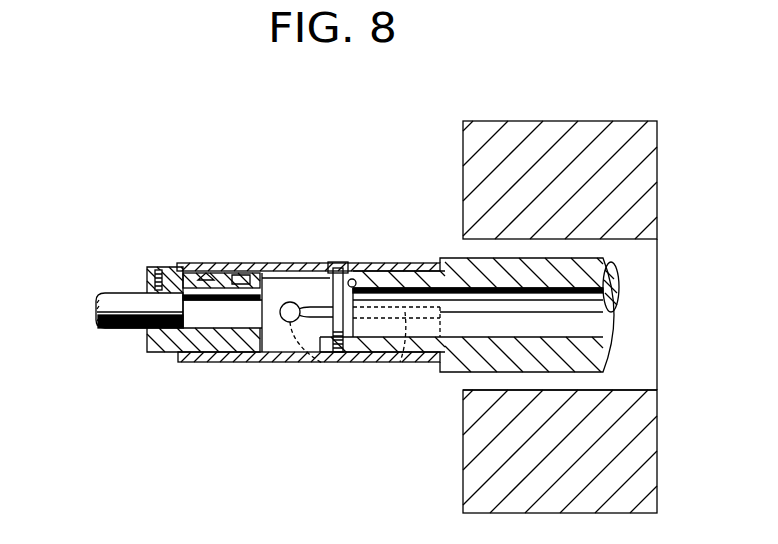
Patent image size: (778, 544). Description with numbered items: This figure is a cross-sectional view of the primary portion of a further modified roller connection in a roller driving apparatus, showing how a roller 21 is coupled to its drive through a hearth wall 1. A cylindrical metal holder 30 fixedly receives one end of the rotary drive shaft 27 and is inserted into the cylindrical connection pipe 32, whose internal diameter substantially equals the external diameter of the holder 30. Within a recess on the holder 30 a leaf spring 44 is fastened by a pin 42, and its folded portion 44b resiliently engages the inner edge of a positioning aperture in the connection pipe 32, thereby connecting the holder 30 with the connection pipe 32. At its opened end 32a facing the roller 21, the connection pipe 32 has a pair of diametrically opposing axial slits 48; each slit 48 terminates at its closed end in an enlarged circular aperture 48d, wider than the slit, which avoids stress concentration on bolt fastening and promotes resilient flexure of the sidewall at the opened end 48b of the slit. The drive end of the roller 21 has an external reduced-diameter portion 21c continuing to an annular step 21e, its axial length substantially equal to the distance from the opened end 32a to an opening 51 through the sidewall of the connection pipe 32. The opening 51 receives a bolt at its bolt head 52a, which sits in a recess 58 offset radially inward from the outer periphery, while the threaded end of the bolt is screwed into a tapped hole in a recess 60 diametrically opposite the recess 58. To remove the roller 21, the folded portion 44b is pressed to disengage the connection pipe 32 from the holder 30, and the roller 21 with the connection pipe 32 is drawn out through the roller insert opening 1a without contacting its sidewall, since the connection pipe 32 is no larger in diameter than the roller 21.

The hearth wall 1 is at (582, 155).
The roller insert opening 1a is at (592, 390).
The roller 21 is at (592, 260).
The external reduced-diameter portion 21c is at (368, 270).
The annular step 21e is at (444, 258).
The rotary drive shaft 27 is at (115, 296).
The holder 30 is at (165, 268).
The connection pipe 32 is at (280, 268).
The opened end 32a is at (440, 362).
The pin 42 is at (238, 266).
The leaf spring 44 is at (222, 268).
The folded portion 44b is at (205, 268).
The slit 48 is at (397, 265).
The opened end of the slit 48b is at (400, 362).
The enlarged aperture 48d is at (272, 362).
The opening 51 is at (340, 265).
The bolt head 52a is at (332, 265).
The recess 58 is at (325, 265).
The recess 60 is at (310, 362).